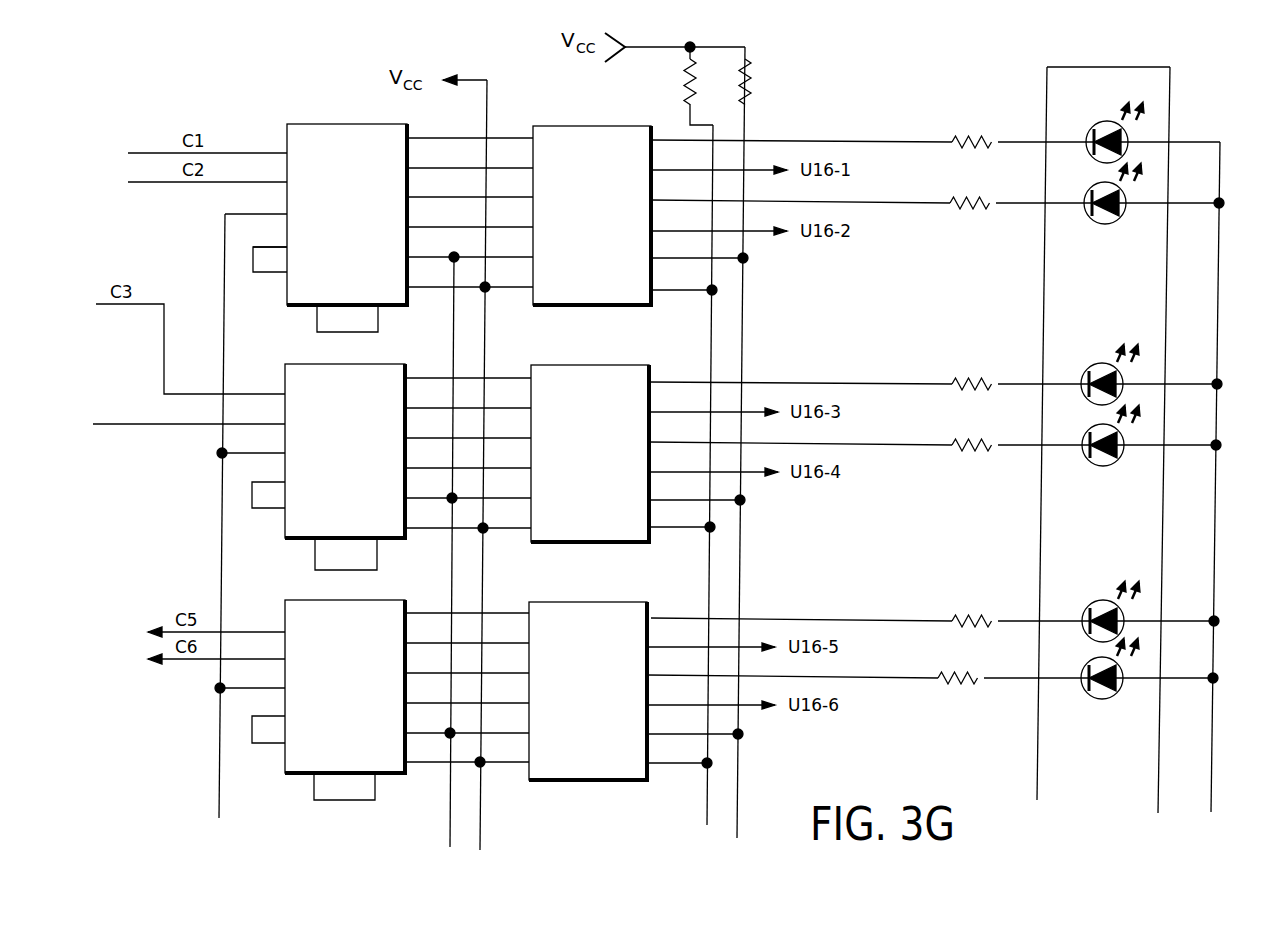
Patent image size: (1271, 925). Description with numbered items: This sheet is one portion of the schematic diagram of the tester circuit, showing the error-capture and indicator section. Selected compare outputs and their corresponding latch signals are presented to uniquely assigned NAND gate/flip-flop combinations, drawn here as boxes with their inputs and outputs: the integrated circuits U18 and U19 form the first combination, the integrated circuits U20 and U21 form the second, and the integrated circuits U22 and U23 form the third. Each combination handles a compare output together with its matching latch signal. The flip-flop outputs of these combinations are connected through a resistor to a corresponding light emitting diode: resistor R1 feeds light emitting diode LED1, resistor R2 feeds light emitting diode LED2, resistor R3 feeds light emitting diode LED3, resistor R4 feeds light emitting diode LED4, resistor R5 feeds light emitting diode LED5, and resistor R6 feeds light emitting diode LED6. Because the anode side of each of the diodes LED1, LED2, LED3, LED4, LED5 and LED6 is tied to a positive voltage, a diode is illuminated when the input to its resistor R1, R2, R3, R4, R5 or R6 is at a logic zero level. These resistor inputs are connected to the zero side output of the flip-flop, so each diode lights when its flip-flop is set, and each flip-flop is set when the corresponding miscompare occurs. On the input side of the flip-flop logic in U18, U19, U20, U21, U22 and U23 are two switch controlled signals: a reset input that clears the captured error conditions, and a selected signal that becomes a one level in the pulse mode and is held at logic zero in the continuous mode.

The NAND gate/flip-flop integrated circuit U18 is at (339, 225).
The NAND gate/flip-flop integrated circuit U19 is at (604, 212).
The NAND gate/flip-flop integrated circuit U20 is at (337, 464).
The NAND gate/flip-flop integrated circuit U21 is at (602, 450).
The NAND gate/flip-flop integrated circuit U22 is at (337, 697).
The NAND gate/flip-flop integrated circuit U23 is at (600, 687).
The resistor R1 is at (935, 121).
The resistor R2 is at (937, 182).
The resistor R3 is at (935, 363).
The resistor R4 is at (935, 255).
The resistor R5 is at (927, 337).
The resistor R6 is at (932, 657).
The light emitting diode LED1 is at (1098, 131).
The light emitting diode LED2 is at (1096, 192).
The light emitting diode LED3 is at (1093, 373).
The light emitting diode LED4 is at (1094, 434).
The light emitting diode LED5 is at (1093, 610).
The light emitting diode LED6 is at (1092, 667).